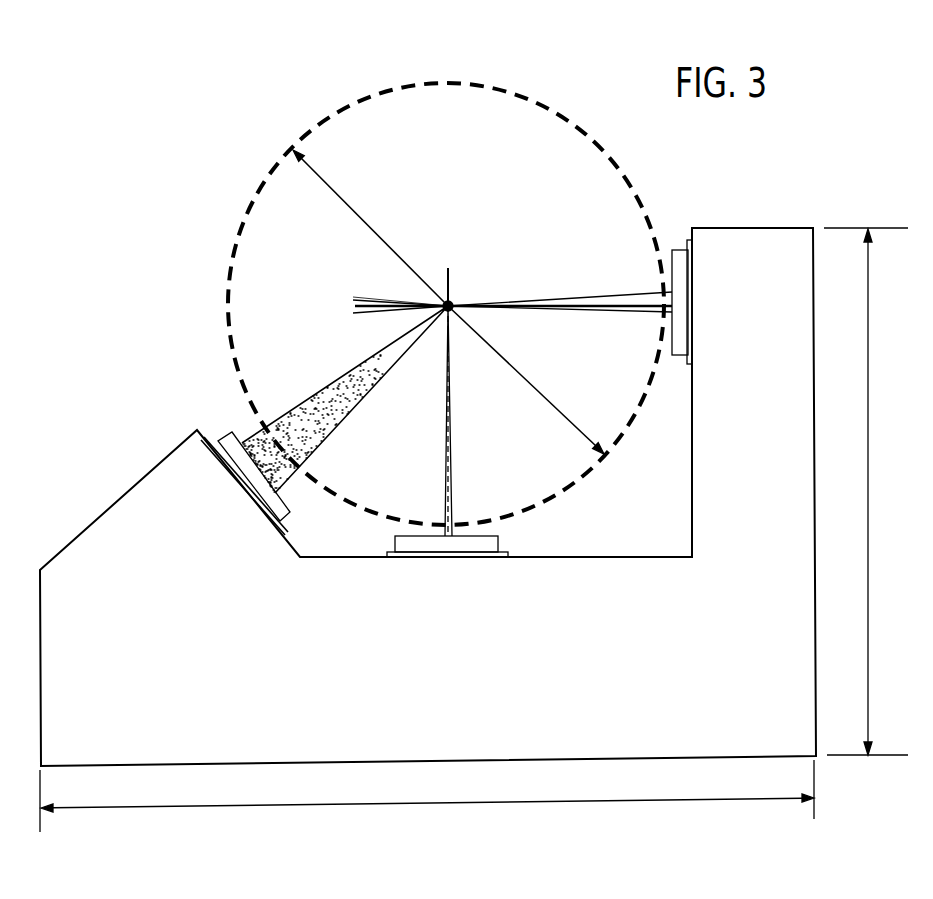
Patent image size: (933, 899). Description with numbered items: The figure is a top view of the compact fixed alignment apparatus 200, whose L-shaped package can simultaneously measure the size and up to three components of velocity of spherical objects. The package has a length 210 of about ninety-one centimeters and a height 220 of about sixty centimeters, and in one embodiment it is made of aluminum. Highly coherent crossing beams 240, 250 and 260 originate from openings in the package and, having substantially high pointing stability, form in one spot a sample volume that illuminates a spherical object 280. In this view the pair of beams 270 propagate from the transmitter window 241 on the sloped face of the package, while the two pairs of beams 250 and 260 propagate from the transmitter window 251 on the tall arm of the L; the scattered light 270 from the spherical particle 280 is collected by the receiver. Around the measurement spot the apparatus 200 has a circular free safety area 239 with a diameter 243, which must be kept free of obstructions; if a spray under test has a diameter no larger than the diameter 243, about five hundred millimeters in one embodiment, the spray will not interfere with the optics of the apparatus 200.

The compact fixed alignment apparatus 200 is at (126, 82).
The length 210 is at (427, 797).
The height 220 is at (866, 491).
The circular free safety area 239 is at (548, 102).
The pair of crossing beams 240 is at (453, 445).
The transmitter window 241 is at (225, 438).
The diameter 243 is at (316, 178).
The pair of crossing beams 250 is at (637, 312).
The transmitter window 251 is at (676, 250).
The pair of crossing beams 260 is at (604, 293).
The scattered light 270 is at (365, 397).
The spherical object 280 is at (455, 302).